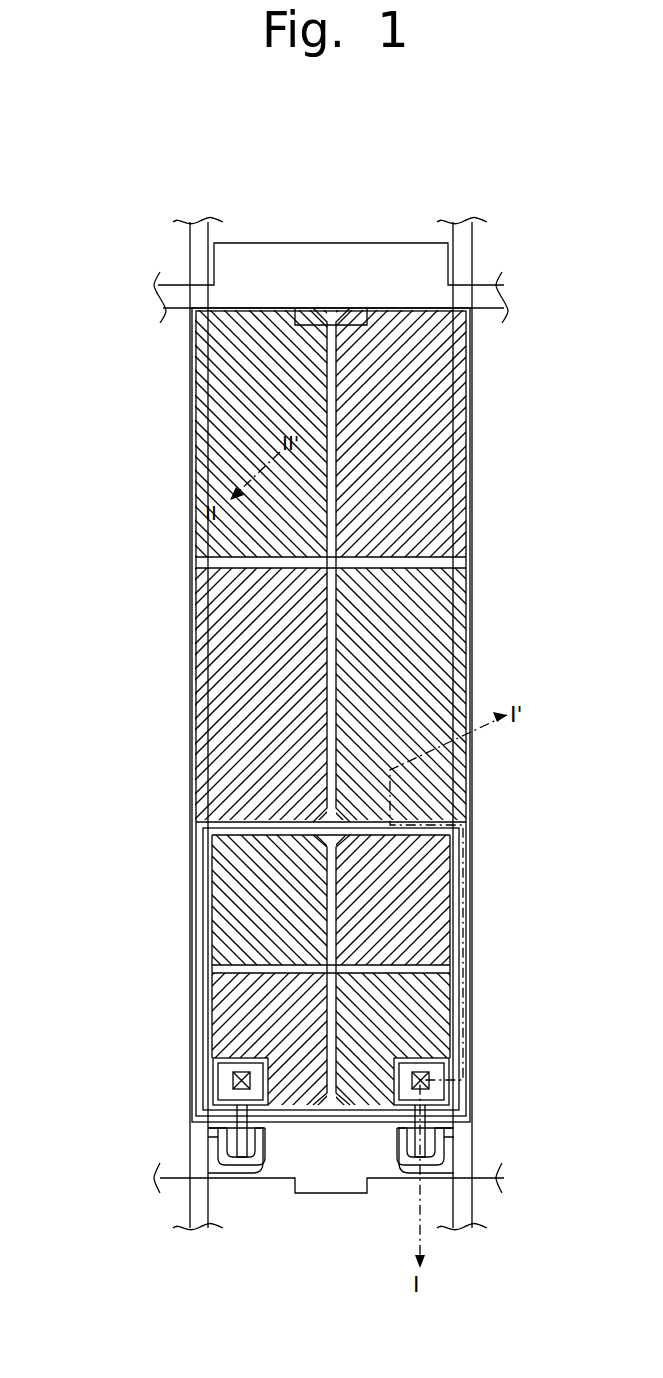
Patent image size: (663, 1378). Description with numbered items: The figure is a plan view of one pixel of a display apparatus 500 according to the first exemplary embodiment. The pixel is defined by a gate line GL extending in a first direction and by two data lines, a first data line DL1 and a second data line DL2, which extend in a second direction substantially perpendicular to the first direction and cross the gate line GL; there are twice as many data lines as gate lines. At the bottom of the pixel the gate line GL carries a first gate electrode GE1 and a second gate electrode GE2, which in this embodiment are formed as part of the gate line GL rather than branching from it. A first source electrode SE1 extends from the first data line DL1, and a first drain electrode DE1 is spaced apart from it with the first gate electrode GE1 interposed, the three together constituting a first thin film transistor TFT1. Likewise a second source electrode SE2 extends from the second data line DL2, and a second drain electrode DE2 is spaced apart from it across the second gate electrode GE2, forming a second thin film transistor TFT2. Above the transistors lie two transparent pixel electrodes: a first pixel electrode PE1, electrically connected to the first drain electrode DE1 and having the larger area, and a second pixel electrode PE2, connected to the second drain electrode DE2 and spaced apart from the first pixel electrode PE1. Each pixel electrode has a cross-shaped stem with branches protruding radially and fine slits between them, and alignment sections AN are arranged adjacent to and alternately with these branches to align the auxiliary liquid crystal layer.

The display apparatus 500 is at (350, 180).
The gate line GL is at (495, 300).
The first data line DL1 is at (472, 1210).
The second data line DL2 is at (190, 1210).
The first pixel electrode PE1 is at (465, 355).
The alignment section AN is at (440, 530).
The second pixel electrode PE2 is at (445, 855).
The first thin film transistor TFT1 is at (518, 1120).
The first gate electrode GE1 is at (452, 1140).
The first source electrode SE1 is at (450, 1158).
The first drain electrode DE1 is at (452, 1122).
The second thin film transistor TFT2 is at (147, 1120).
The second gate electrode GE2 is at (210, 1140).
The second source electrode SE2 is at (212, 1158).
The second drain electrode DE2 is at (210, 1122).